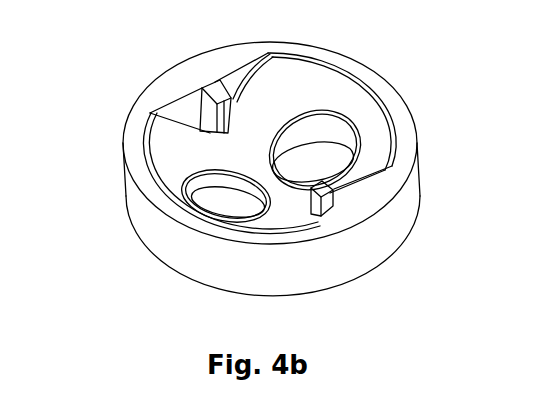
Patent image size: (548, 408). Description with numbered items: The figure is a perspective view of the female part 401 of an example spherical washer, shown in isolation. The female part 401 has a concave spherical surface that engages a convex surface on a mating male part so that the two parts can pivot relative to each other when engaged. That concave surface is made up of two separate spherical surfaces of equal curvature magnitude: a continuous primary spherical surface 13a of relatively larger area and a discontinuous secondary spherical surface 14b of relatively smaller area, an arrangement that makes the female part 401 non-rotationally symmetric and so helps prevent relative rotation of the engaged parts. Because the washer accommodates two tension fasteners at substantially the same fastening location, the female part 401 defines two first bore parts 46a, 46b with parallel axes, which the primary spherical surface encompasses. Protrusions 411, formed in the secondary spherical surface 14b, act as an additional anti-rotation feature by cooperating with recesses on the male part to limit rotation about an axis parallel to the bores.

The female part 401 is at (436, 82).
The protrusions 411 is at (212, 88).
The primary spherical surface 13a is at (298, 87).
The secondary spherical surface 14b is at (197, 108).
The first bore part 46a is at (217, 200).
The first bore part 46b is at (332, 128).